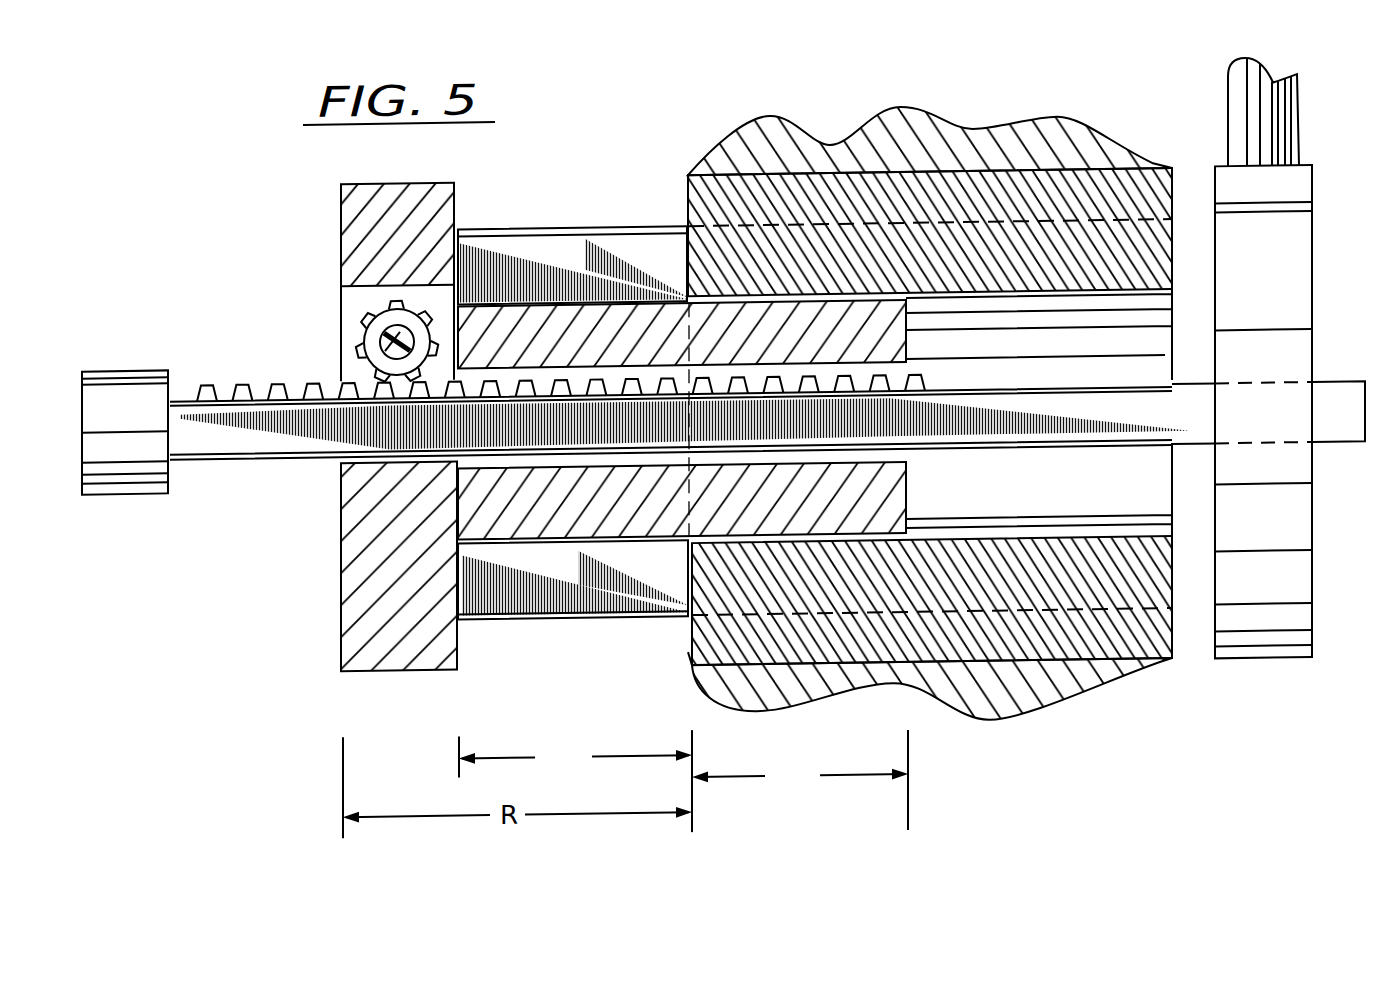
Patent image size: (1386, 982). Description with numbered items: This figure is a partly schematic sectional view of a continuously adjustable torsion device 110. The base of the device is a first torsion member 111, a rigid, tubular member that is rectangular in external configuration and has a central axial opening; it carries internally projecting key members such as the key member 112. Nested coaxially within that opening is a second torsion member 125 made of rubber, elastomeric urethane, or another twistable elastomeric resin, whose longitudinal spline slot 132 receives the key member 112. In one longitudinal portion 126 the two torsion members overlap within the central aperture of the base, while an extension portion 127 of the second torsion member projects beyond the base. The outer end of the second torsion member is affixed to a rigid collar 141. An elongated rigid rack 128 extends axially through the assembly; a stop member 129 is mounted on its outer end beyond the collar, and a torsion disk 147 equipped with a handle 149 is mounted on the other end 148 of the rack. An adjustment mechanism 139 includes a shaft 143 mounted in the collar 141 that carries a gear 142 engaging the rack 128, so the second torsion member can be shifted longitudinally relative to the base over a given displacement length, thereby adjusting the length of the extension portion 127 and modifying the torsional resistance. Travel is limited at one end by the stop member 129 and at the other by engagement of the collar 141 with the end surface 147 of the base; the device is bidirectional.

The continuously adjustable torsion device 110 is at (1030, 35).
The first torsion member 111 is at (1046, 613).
The key member 112 is at (690, 178).
The second torsion member 125 is at (535, 327).
The longitudinal portion 126 is at (801, 781).
The extension portion 127 is at (575, 782).
The rack 128 is at (233, 435).
The stop member 129 is at (120, 404).
The spline slot 132 is at (640, 246).
The adjustment mechanism 139 is at (317, 472).
The rigid collar 141 is at (393, 628).
The gear 142 is at (367, 310).
The shaft 143 is at (383, 343).
The torsion disk 147 is at (688, 652).
The other end of rack 148 is at (1338, 406).
The handle 149 is at (1282, 121).